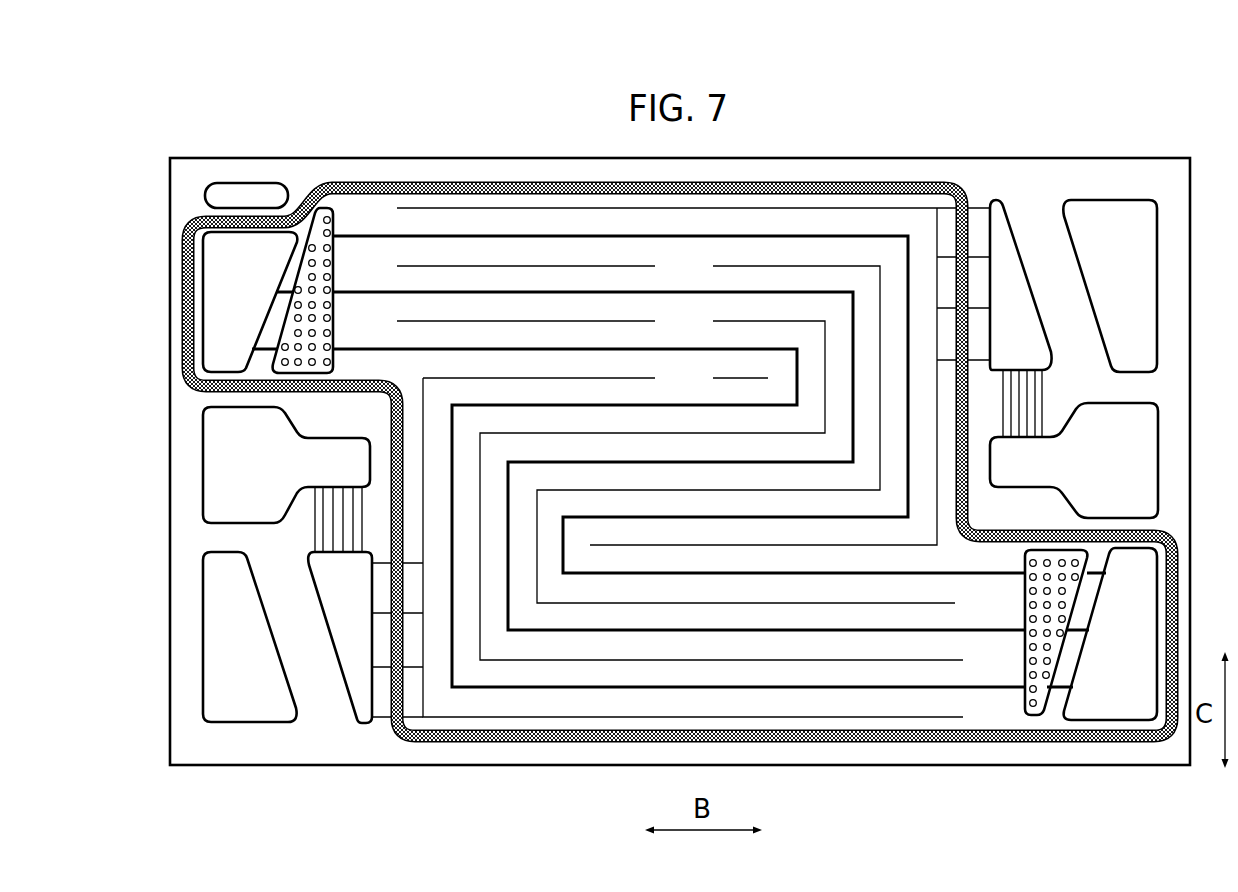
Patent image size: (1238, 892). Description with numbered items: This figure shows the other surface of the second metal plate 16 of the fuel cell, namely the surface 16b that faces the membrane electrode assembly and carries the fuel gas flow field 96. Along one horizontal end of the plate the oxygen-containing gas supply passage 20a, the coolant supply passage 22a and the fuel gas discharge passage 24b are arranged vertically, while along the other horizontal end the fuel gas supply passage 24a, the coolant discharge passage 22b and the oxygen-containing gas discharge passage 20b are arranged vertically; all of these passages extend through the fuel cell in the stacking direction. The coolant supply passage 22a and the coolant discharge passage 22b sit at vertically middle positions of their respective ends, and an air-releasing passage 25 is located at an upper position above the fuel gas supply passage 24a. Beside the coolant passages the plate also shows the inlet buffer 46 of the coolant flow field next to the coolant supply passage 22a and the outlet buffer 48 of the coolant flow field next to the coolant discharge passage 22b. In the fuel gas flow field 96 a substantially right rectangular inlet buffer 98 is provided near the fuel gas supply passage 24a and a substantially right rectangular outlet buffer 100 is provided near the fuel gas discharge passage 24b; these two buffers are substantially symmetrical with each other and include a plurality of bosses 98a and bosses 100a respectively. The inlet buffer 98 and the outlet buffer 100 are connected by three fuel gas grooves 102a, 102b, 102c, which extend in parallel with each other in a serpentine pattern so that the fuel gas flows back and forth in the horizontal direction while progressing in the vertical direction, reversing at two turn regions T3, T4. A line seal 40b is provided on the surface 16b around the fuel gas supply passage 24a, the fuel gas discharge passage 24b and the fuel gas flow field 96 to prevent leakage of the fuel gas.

The second metal plate 16 is at (952, 135).
The surface 16b is at (980, 747).
The air-releasing passage 25 is at (242, 190).
The fuel gas flow field 96 is at (459, 232).
The inlet buffer 98 is at (338, 228).
The bosses 98a is at (333, 269).
The fuel gas supply passage 24a is at (250, 302).
The coolant discharge passage 22b is at (286, 479).
The outlet buffer 48 is at (340, 637).
The oxygen-containing gas discharge passage 20b is at (250, 637).
The inlet buffer 46 is at (1021, 318).
The oxygen-containing gas supply passage 20a is at (1110, 286).
The coolant supply passage 22a is at (1074, 460).
The fuel gas discharge passage 24b is at (1110, 634).
The outlet buffer 100 is at (1022, 694).
The bosses 100a is at (1023, 596).
The fuel gas groove 102a is at (686, 240).
The fuel gas groove 102b is at (686, 296).
The fuel gas groove 102c is at (686, 353).
The line seal 40b is at (963, 532).
The turn region T3 is at (976, 189).
The turn region T4 is at (471, 722).